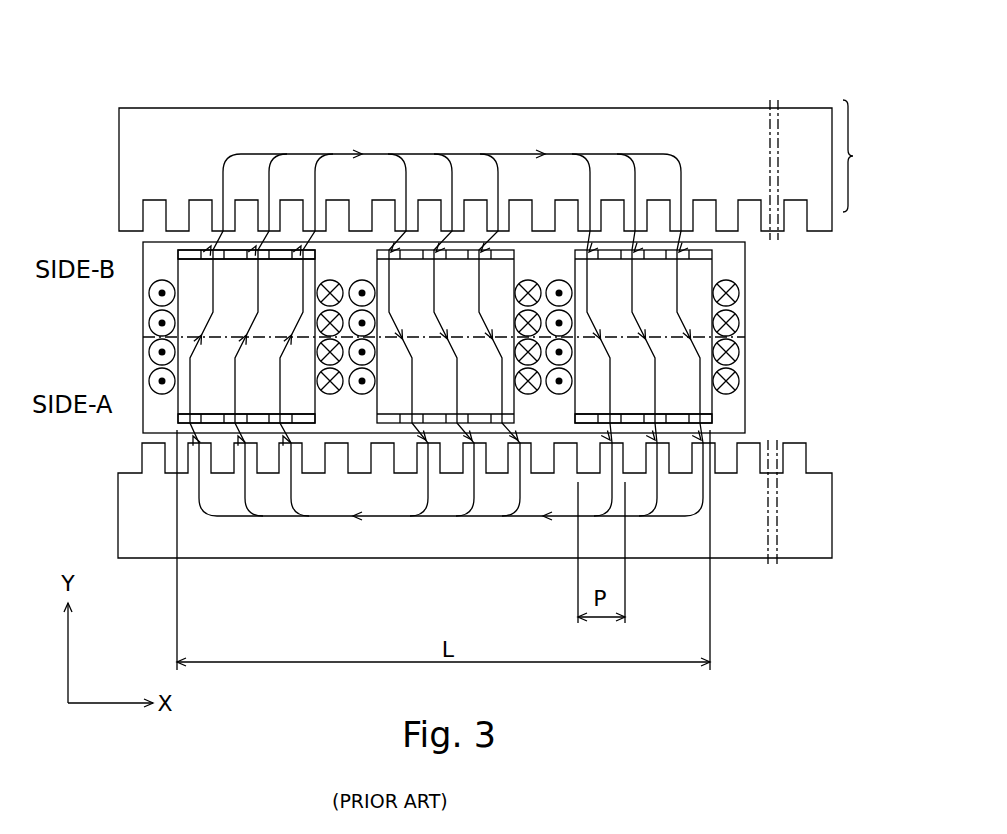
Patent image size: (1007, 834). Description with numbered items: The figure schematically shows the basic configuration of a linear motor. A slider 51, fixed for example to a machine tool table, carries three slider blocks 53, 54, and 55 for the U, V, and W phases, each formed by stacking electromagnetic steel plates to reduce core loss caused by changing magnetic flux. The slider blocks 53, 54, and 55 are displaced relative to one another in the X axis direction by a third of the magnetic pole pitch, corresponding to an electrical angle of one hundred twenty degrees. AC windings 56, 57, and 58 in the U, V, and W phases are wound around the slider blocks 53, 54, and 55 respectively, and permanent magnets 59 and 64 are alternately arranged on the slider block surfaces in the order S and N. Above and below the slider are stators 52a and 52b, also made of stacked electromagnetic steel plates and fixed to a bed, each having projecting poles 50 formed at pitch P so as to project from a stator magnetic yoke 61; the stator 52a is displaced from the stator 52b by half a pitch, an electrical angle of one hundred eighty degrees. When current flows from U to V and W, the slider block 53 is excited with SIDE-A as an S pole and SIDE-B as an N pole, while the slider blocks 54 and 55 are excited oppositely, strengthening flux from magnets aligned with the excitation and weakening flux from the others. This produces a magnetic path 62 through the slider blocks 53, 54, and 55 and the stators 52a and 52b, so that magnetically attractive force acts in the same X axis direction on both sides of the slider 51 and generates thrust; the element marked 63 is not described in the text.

The projecting pole 50 is at (748, 462).
The slider 51 is at (752, 342).
The stator 52a is at (738, 543).
The stator 52b is at (622, 137).
The slider block 53 is at (240, 278).
The slider block 54 is at (453, 287).
The slider block 55 is at (650, 277).
The AC winding 56 is at (142, 339).
The AC winding 57 is at (353, 394).
The AC winding 58 is at (552, 397).
The permanent magnet 59 is at (214, 432).
The stator magnetic yoke 61 is at (866, 156).
The magnetic path 62 is at (410, 152).
The magnetic flux path 63 is at (668, 335).
The permanent magnet 64 is at (196, 248).